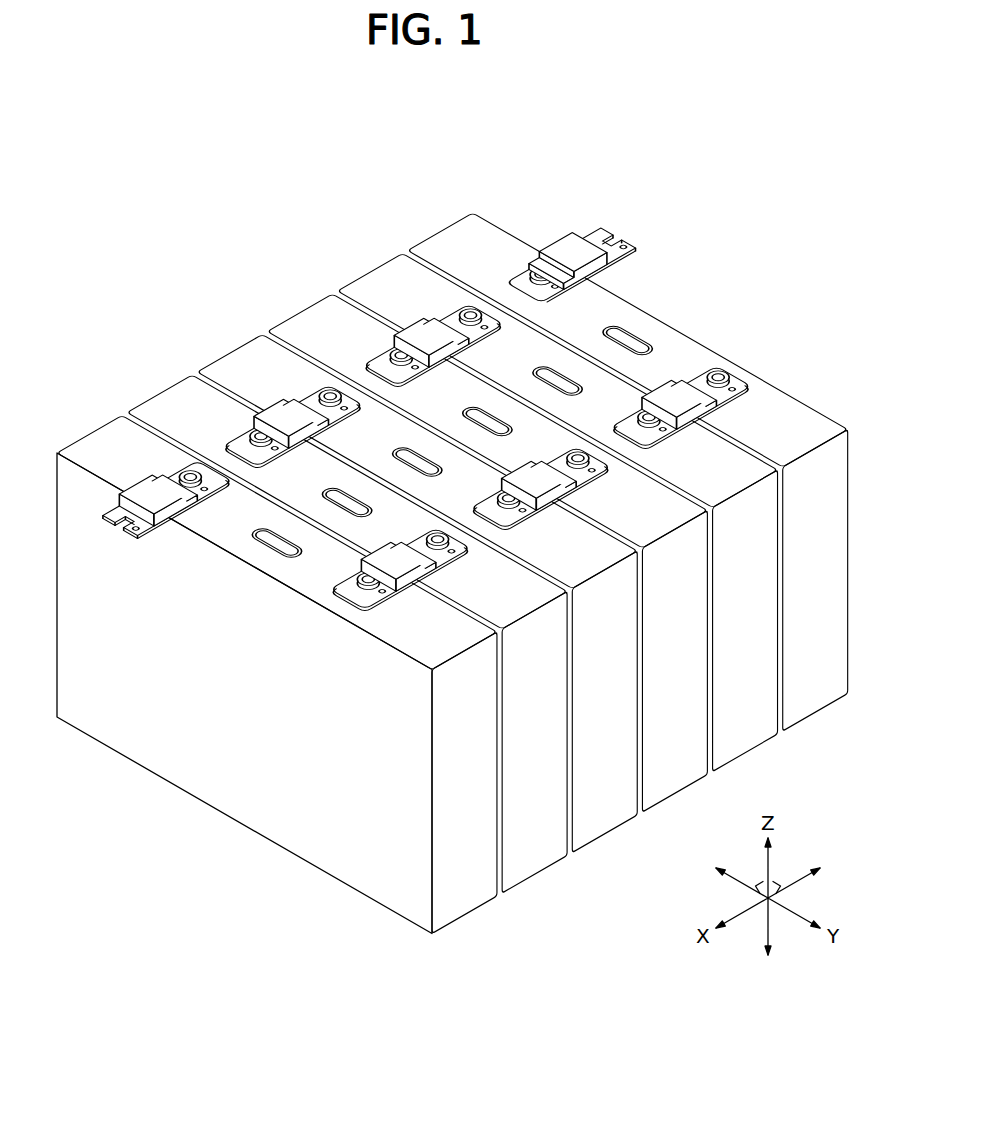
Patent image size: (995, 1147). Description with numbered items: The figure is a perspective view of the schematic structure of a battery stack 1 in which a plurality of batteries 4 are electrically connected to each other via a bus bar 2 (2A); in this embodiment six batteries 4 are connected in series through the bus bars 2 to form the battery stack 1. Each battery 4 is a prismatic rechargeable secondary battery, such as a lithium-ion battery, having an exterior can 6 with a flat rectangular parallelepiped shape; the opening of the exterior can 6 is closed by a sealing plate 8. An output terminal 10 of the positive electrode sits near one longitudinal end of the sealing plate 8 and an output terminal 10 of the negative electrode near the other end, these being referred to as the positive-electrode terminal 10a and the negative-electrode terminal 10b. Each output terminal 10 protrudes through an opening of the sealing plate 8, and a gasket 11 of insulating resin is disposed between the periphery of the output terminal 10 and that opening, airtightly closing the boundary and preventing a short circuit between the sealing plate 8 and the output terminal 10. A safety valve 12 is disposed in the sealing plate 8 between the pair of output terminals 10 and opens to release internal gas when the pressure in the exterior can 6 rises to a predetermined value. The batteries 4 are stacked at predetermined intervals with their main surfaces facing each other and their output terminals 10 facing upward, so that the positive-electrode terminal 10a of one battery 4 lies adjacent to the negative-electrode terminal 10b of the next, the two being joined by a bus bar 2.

The battery stack 1 is at (484, 1081).
The bus bar 2 is at (567, 232).
The bus bar 2A is at (565, 236).
The battery 4 is at (262, 802).
The exterior can 6 is at (470, 902).
The sealing plate 8 is at (105, 448).
The output terminal 10 is at (281, 646).
The positive-electrode terminal 10a is at (193, 470).
The negative-electrode terminal 10b is at (352, 598).
The gasket 11 is at (232, 457).
The safety valve 12 is at (255, 546).